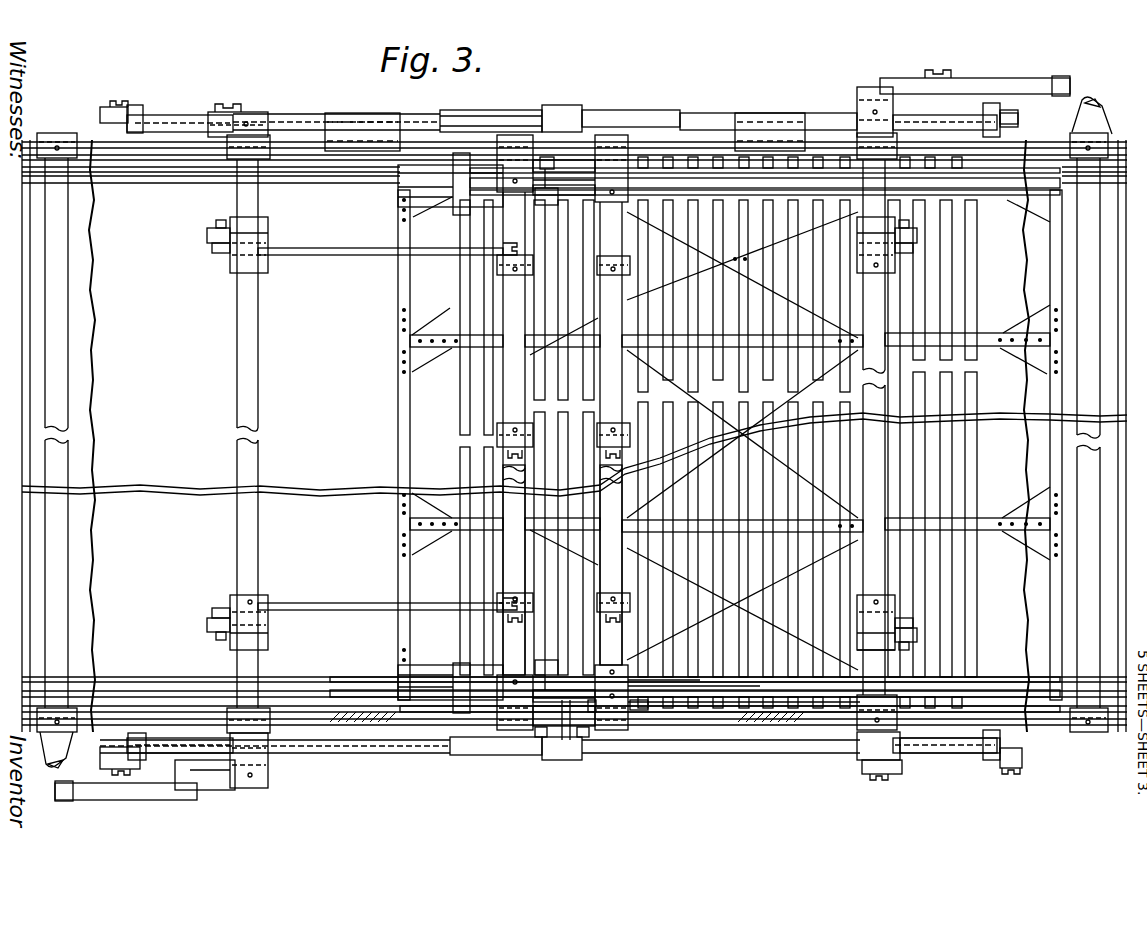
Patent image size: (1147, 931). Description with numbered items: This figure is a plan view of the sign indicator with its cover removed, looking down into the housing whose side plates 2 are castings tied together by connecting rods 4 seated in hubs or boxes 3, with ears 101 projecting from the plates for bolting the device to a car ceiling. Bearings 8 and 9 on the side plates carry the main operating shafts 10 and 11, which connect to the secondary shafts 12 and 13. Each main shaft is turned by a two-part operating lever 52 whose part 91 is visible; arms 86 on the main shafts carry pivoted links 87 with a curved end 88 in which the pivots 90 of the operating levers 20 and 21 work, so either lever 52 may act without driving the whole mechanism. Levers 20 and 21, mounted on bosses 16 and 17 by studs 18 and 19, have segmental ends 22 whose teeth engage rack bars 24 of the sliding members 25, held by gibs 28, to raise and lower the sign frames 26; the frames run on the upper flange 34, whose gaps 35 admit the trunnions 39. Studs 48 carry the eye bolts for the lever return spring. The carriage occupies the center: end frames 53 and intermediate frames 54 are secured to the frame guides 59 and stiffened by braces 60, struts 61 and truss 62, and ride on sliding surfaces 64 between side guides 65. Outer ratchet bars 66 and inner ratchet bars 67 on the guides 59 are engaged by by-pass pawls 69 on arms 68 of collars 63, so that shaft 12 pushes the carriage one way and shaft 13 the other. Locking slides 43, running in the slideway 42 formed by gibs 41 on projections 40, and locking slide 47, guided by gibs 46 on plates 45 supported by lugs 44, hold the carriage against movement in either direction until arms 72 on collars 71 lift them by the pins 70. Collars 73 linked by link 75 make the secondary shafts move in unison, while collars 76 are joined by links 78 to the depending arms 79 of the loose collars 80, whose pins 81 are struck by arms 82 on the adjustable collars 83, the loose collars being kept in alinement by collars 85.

The side plates 2 is at (300, 727).
The hubs or boxes 3 is at (52, 134).
The connecting rods 4 is at (57, 353).
The hubs or bearings 8 is at (252, 159).
The hubs or bearings 9 is at (870, 147).
The main operating shaft 10 is at (238, 336).
The main operating shaft 11 is at (876, 427).
The secondary shaft 12 is at (515, 570).
The secondary shaft 13 is at (613, 565).
The boss 16 is at (217, 148).
The boss 17 is at (900, 132).
The stud 18 is at (222, 112).
The stud 19 is at (890, 775).
The operating lever 20 is at (300, 108).
The operating lever 21 is at (708, 113).
The segmental ends 22 is at (655, 104).
The rack bars 24 is at (590, 105).
The sliding member 25 is at (562, 105).
The sign frames 26 is at (497, 265).
The gibs 28 is at (538, 737).
The flange 34 is at (330, 162).
The openings or gaps 35 is at (562, 760).
The trunnions 39 is at (815, 168).
The rectangular projections 40 is at (640, 712).
The gibs 41 is at (572, 760).
The slide way or bearing 42 is at (594, 712).
The locking slides 43 is at (580, 175).
The lugs 44 is at (460, 180).
The plates 45 is at (460, 205).
The gibs 46 is at (549, 443).
The locking slide 47 is at (540, 205).
The studs 48 is at (1090, 115).
The operating lever 52 is at (1005, 92).
The end frames 53 is at (398, 410).
The intermediate frames 54 is at (655, 420).
The frame guides 59 is at (835, 172).
The braces 60 is at (415, 335).
The struts 61 is at (440, 360).
The truss 62 is at (790, 536).
The collars 63 is at (690, 690).
The sliding surfaces 64 is at (133, 174).
The side guides 65 is at (155, 184).
The ratchet bars 66 is at (968, 176).
The ratchet bars 67 is at (845, 196).
The arms 68 is at (720, 692).
The by-pass pawls 69 is at (745, 700).
The projection pins 70 is at (525, 695).
The collars 71 is at (608, 682).
The arms 72 is at (580, 175).
The collars 73 is at (513, 423).
The link 75 is at (612, 478).
The collars 76 is at (514, 276).
The links 78 is at (350, 256).
The depending arms 79 is at (212, 250).
The loose collar 80 is at (262, 630).
The pins or studs 81 is at (218, 222).
The arms 82 is at (207, 236).
The tight but adjustable collars 83 is at (878, 645).
The collars 85 is at (262, 270).
The arms 86 is at (162, 118).
The pivoted links 87 is at (135, 105).
The segmental or curved end 88 is at (100, 114).
The pivots 90 is at (115, 100).
The part 91 is at (175, 770).
The ears 101 is at (385, 125).